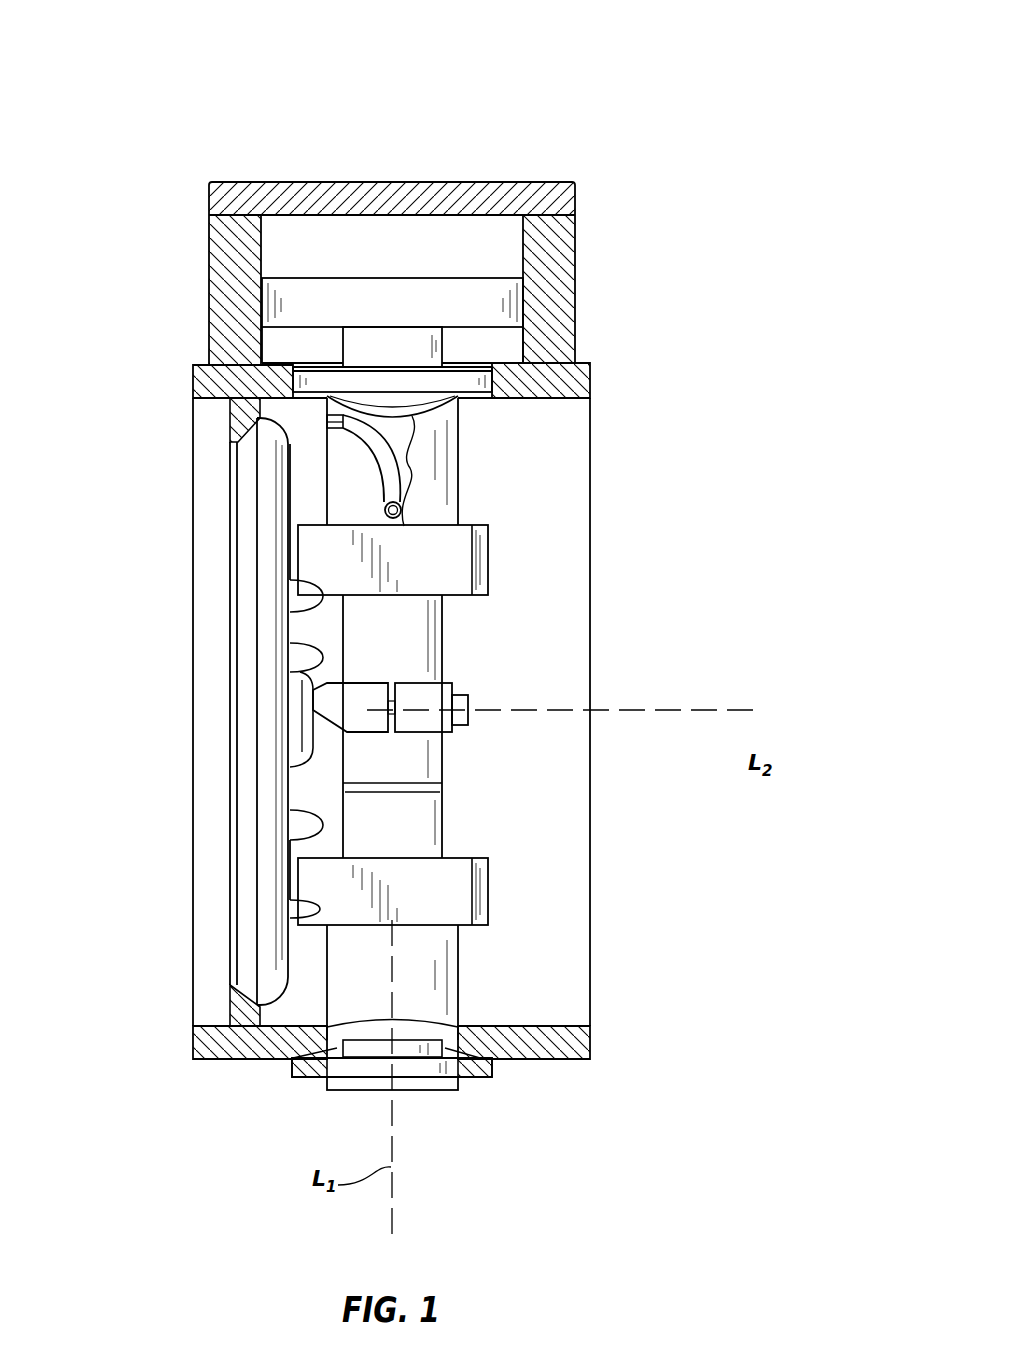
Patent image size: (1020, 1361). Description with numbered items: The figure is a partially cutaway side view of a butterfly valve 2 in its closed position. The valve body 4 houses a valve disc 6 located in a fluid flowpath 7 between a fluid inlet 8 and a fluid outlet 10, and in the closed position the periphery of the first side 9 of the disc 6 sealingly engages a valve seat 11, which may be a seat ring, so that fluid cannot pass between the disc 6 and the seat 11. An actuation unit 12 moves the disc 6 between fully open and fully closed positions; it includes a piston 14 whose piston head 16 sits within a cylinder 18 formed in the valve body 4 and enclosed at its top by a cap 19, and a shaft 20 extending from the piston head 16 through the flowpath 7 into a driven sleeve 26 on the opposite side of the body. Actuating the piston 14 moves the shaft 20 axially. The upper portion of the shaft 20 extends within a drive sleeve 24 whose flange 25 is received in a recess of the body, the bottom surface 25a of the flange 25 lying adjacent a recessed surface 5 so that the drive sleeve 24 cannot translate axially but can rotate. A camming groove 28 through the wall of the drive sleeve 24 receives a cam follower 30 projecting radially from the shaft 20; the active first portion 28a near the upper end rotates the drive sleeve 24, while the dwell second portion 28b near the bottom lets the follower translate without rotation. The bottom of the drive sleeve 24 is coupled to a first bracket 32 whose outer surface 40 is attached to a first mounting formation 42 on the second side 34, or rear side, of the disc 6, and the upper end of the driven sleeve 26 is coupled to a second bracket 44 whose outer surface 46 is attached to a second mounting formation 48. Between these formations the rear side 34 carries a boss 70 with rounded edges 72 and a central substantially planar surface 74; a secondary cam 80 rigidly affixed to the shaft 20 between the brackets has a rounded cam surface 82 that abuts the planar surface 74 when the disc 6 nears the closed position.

The butterfly valve 2 is at (232, 120).
The valve body 4 is at (215, 380).
The recessed surface 5 is at (312, 390).
The valve disc 6 is at (265, 800).
The fluid flowpath 7 is at (558, 684).
The fluid inlet 8 is at (193, 960).
The first side 9 is at (220, 778).
The fluid outlet 10 is at (592, 970).
The valve seat 11 is at (237, 421).
The actuation unit 12 is at (460, 661).
The piston 14 is at (386, 343).
The piston head 16 is at (465, 296).
The cylinder 18 is at (320, 234).
The cap 19 is at (273, 182).
The shaft 20 is at (380, 655).
The drive sleeve 24 is at (430, 478).
The flange 25 is at (492, 385).
The bottom surface 25a is at (455, 408).
The driven sleeve 26 is at (422, 978).
The camming groove 28 is at (348, 451).
The first portion 28a is at (430, 470).
The second portion 28b is at (403, 512).
The cam follower 30 is at (378, 505).
The first bracket 32 is at (425, 565).
The second side 34 is at (300, 815).
The outer surface 40 is at (298, 552).
The first mounting formation 42 is at (308, 607).
The second bracket 44 is at (432, 888).
The outer surface 46 is at (298, 886).
The second mounting formation 48 is at (298, 915).
The boss 70 is at (365, 710).
The rounded edges 72 is at (307, 651).
The substantially planar surface 74 is at (400, 732).
The secondary cam 80 is at (420, 708).
The rounded cam surface 82 is at (310, 697).